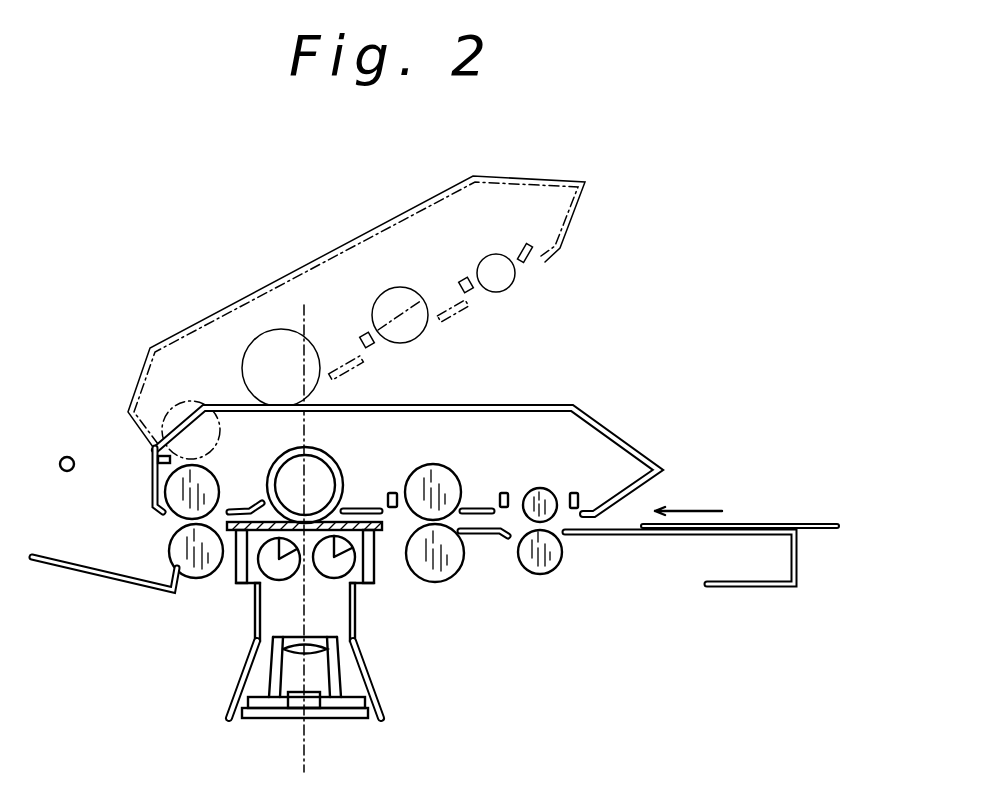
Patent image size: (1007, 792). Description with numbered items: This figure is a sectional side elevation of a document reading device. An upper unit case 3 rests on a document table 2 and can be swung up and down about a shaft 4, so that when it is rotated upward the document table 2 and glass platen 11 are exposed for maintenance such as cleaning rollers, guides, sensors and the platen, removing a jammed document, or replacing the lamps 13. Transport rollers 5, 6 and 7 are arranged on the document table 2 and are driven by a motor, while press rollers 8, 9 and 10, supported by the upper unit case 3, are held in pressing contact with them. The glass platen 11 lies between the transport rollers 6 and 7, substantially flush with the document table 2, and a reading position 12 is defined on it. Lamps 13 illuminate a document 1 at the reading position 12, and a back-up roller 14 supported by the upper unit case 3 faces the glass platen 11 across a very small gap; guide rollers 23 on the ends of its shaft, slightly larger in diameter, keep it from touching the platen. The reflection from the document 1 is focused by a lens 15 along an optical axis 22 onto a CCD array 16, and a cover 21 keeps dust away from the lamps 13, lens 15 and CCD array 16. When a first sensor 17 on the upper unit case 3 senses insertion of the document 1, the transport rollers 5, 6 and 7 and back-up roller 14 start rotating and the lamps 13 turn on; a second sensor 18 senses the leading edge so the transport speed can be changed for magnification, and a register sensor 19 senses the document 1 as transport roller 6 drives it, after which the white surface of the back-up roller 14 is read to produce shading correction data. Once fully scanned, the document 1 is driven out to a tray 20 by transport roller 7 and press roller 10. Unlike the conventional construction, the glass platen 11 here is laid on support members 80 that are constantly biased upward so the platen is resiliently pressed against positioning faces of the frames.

The document 1 is at (766, 523).
The document table 2 is at (622, 537).
The upper unit case 3 is at (580, 210).
The shaft 4 is at (67, 457).
The transport roller 5 is at (548, 573).
The transport roller 6 is at (458, 578).
The transport roller 7 is at (183, 578).
The press roller 8 is at (544, 488).
The press roller 9 is at (441, 466).
The press roller 10 is at (178, 497).
The glass platen 11 is at (367, 508).
The reading position 12 is at (302, 518).
The lamps 13 is at (319, 572).
The back-up roller 14 is at (324, 452).
The lens 15 is at (312, 637).
The CCD array 16 is at (322, 702).
The first sensor 17 is at (576, 493).
The second sensor 18 is at (503, 493).
The register sensor 19 is at (393, 493).
The tray 20 is at (78, 575).
The cover 21 is at (232, 703).
The optical axis 22 is at (304, 735).
The guide rollers 23 is at (277, 452).
The support members 80 is at (237, 583).